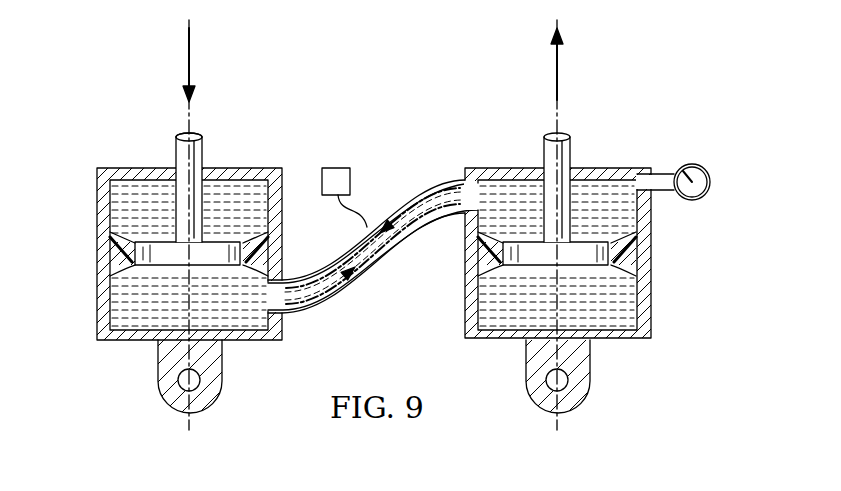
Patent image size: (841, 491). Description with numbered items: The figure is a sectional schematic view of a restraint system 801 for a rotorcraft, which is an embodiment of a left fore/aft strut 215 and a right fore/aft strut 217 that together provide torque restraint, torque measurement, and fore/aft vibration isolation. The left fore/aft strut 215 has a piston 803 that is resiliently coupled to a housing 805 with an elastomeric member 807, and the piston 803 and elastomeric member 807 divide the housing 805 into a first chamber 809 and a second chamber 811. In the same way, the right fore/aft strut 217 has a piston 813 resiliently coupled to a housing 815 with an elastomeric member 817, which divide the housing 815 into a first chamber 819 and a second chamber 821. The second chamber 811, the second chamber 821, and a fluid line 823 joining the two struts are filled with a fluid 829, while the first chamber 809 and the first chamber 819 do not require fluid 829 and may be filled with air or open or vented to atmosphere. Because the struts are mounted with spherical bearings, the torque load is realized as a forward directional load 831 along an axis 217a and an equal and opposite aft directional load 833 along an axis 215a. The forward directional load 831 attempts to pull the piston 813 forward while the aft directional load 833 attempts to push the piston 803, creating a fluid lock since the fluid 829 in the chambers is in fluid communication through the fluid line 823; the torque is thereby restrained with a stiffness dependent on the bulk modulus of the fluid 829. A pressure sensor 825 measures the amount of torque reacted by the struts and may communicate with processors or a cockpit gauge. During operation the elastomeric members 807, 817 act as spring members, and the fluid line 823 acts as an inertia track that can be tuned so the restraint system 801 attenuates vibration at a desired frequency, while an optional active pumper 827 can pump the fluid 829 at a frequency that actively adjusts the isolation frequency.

The restraint system 801 is at (90, 52).
The left fore/aft strut 215 is at (90, 137).
The axis 215a is at (180, 165).
The right fore/aft strut 217 is at (602, 225).
The axis 217a is at (524, 187).
The piston 803 is at (205, 157).
The housing 805 is at (100, 230).
The elastomeric member 807 is at (112, 262).
The first chamber 809 is at (115, 190).
The second chamber 811 is at (112, 318).
The piston 813 is at (557, 297).
The housing 815 is at (587, 253).
The elastomeric member 817 is at (592, 249).
The first chamber 819 is at (557, 186).
The second chamber 821 is at (587, 370).
The fluid line 823 is at (415, 184).
The pressure sensor 825 is at (688, 169).
The active pumper 827 is at (336, 168).
The fluid 829 is at (383, 255).
The forward directional load 831 is at (584, 64).
The aft directional load 833 is at (185, 60).